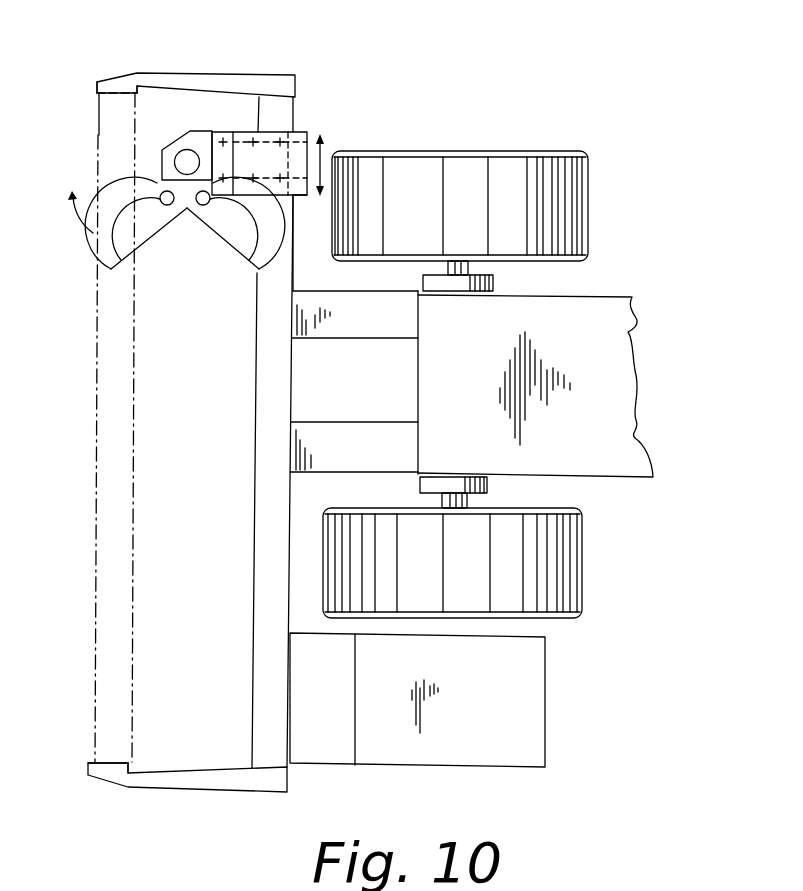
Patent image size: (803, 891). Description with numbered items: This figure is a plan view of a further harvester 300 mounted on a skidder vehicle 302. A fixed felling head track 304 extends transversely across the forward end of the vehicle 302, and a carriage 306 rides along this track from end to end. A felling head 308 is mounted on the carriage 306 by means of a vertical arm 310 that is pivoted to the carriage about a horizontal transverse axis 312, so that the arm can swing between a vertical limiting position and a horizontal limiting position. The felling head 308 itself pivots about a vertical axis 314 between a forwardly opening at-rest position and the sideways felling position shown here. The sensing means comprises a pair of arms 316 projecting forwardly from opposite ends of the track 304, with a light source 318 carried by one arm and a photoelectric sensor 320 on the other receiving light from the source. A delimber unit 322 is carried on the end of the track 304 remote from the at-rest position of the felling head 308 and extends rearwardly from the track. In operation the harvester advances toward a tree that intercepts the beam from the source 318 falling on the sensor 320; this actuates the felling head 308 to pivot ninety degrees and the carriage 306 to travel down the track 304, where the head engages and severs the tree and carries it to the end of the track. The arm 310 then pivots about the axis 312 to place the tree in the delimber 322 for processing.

The harvester 300 is at (602, 539).
The skidder vehicle 302 is at (623, 330).
The felling head track 304 is at (259, 380).
The carriage 306 is at (300, 136).
The felling head 308 is at (186, 210).
The vertical arm 310 is at (257, 163).
The horizontal transverse axis 312 is at (280, 200).
The vertical axis 314 is at (189, 150).
The arms 316 is at (122, 81).
The light source 318 is at (93, 95).
The photoelectric sensor 320 is at (84, 758).
The delimber unit 322 is at (520, 672).